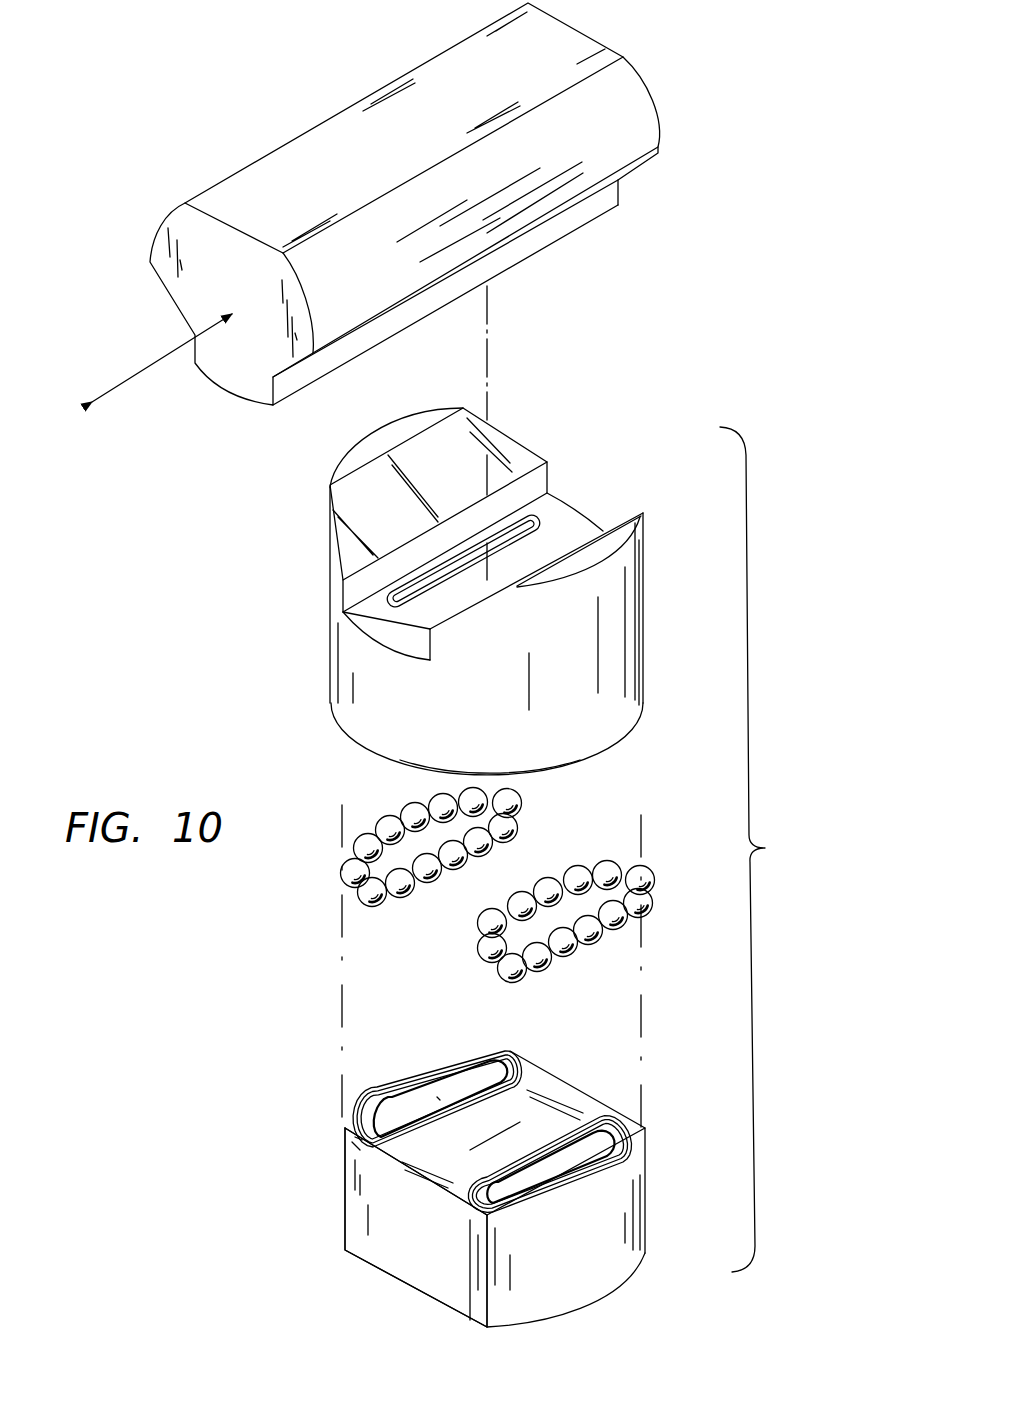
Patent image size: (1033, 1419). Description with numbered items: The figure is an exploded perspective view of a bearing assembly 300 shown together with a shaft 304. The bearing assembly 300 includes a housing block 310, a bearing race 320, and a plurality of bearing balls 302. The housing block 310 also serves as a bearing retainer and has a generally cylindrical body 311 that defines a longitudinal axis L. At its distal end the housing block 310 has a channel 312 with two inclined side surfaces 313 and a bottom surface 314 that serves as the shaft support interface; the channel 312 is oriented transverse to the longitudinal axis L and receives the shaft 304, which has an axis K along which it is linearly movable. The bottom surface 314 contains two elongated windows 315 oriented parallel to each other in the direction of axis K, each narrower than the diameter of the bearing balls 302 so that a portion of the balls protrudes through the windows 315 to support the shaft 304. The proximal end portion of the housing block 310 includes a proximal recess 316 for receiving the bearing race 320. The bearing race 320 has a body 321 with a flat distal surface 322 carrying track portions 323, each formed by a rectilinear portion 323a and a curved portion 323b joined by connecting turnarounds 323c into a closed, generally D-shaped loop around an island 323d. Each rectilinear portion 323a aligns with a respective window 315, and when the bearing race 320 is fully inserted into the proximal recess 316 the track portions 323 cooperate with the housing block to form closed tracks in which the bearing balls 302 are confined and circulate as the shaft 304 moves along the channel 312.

The bearing assembly 300 is at (767, 849).
The bearing balls 302 is at (476, 941).
The shaft 304 is at (418, 141).
The housing block 310 is at (483, 617).
The cylindrical body 311 is at (630, 702).
The channel 312 is at (586, 498).
The inclined side surfaces 313 is at (515, 453).
The bottom surface 314 is at (400, 636).
The elongated windows 315 is at (402, 604).
The proximal recess 316 is at (564, 778).
The bearing race 320 is at (498, 1168).
The body 321 is at (357, 1181).
The flat distal surface 322 is at (413, 1177).
The track portions 323 is at (598, 1110).
The rectilinear portion 323a is at (530, 1150).
The curved portion 323b is at (390, 1075).
The connecting turnarounds 323c is at (508, 1058).
The islands 323d is at (437, 1097).
The shaft axis K is at (143, 370).
The longitudinal axis L is at (488, 376).